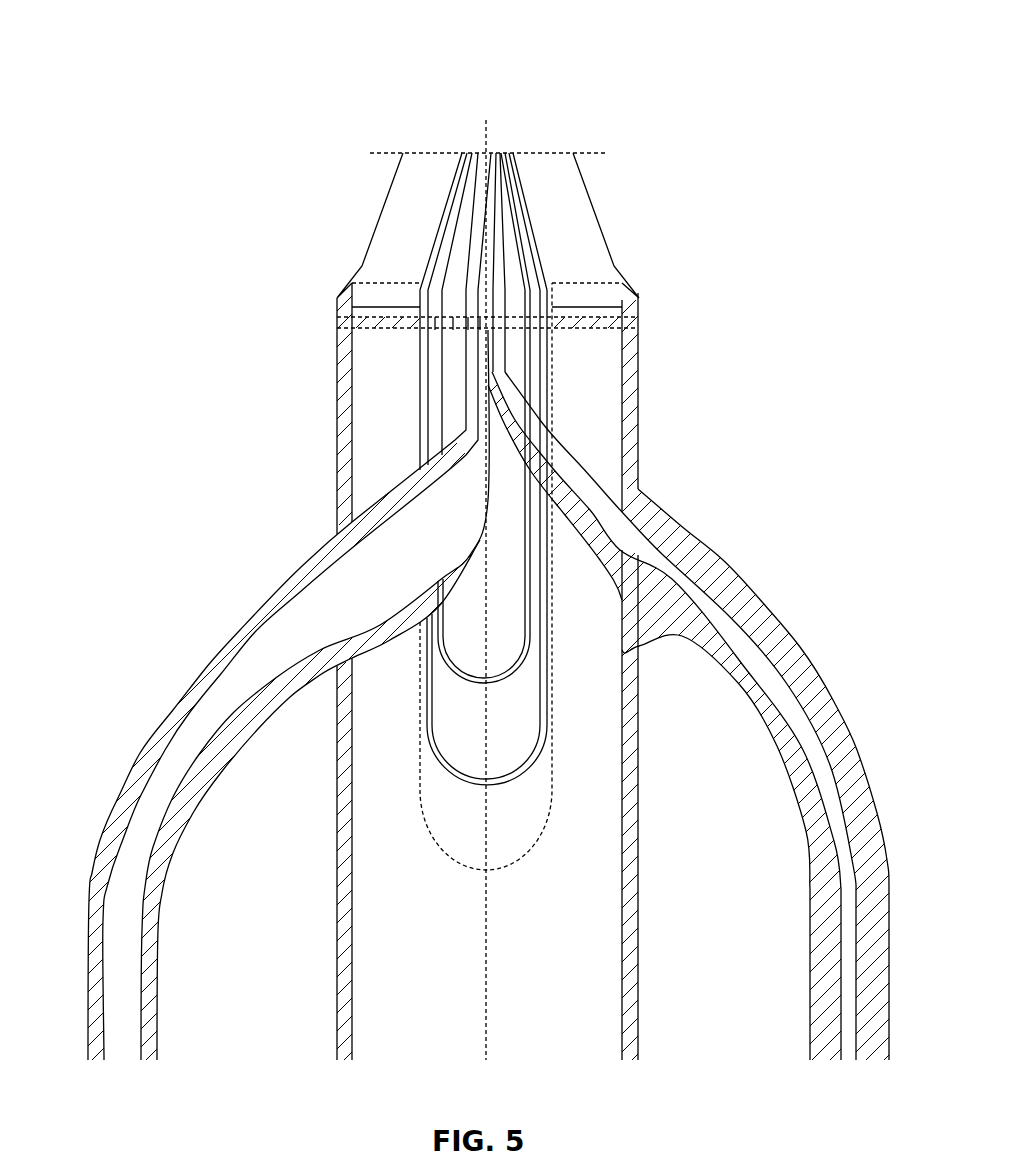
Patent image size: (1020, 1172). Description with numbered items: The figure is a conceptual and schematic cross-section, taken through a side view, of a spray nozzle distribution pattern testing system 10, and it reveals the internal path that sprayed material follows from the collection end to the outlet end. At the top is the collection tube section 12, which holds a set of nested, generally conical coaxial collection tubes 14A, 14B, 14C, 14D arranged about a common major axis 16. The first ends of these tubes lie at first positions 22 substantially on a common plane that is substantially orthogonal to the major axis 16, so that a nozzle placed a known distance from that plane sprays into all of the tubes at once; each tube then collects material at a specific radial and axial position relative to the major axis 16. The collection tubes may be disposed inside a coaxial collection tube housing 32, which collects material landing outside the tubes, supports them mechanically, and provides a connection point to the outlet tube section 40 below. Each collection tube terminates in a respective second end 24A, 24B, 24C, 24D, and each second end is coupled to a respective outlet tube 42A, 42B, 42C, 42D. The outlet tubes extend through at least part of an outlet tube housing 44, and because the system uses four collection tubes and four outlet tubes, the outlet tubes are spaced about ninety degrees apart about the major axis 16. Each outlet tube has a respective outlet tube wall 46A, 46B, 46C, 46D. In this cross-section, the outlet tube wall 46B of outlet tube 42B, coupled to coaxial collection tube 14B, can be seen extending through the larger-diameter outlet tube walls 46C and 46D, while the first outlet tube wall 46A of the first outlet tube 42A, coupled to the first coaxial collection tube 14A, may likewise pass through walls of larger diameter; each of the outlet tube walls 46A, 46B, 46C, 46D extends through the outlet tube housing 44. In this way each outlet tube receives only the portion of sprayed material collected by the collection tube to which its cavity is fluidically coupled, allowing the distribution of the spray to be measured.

The spray nozzle distribution pattern testing system 10 is at (790, 65).
The collection tube section 12 is at (153, 152).
The first coaxial collection tube 14A is at (488, 152).
The coaxial collection tube 14B is at (487, 152).
The coaxial collection tube 14C is at (486, 152).
The coaxial collection tube 14D is at (485, 152).
The major axis 16 is at (487, 135).
The first positions 22 is at (605, 153).
The second end 24A is at (480, 318).
The second end 24B is at (468, 317).
The second end 24C is at (453, 317).
The second end 24D is at (435, 317).
The coaxial collection tube housing 32 is at (640, 297).
The outlet tube section 40 is at (153, 338).
The first outlet tube 42A is at (742, 612).
The outlet tube 42B is at (290, 617).
The outlet tube 42C is at (498, 578).
The outlet tube 42D is at (517, 683).
The outlet tube housing 44 is at (631, 343).
The first outlet tube wall 46A is at (797, 652).
The outlet tube wall 46B is at (207, 662).
The outlet tube wall 46C is at (528, 628).
The outlet tube wall 46D is at (540, 727).